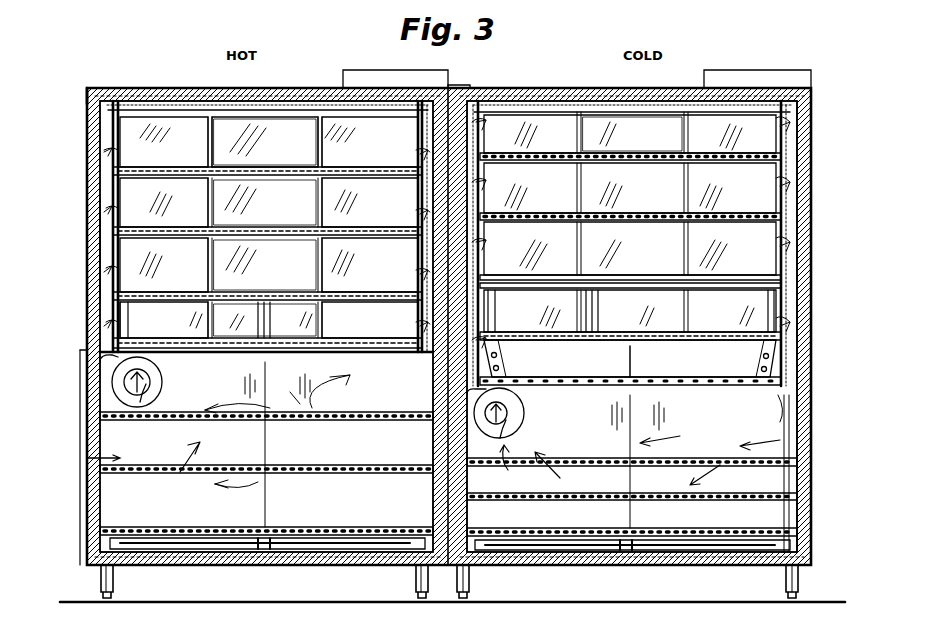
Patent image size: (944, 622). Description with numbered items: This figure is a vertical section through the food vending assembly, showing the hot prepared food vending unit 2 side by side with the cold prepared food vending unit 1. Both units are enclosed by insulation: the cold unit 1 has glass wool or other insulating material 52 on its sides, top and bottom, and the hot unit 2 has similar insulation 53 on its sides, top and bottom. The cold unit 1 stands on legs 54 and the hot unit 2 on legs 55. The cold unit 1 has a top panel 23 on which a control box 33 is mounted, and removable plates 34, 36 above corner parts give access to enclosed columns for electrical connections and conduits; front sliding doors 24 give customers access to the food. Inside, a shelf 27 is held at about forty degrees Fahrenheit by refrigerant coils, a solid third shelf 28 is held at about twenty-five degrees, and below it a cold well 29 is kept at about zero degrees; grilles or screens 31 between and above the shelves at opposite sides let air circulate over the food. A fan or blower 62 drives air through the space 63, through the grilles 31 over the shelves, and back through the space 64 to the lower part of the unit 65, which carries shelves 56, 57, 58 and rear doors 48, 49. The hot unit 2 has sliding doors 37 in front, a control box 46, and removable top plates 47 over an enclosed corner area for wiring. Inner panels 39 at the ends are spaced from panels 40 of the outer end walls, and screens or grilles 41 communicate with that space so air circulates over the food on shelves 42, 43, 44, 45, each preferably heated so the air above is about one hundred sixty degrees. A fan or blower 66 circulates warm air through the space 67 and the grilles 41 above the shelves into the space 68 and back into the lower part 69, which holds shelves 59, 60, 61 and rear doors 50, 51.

The cold prepared food vending unit 1 is at (808, 400).
The hot prepared food vending unit 2 is at (76, 416).
The top panel 23 is at (626, 98).
The front sliding doors 24 is at (582, 138).
The shelf 27 is at (616, 212).
The third shelf 28 is at (612, 264).
The cold well 29 is at (642, 366).
The grilles or screens 31 is at (482, 122).
The control box 33 is at (735, 70).
The removable plate 34 is at (462, 88).
The removable plate 36 is at (636, 153).
The sliding doors 37 is at (214, 146).
The inner panels 39 is at (118, 218).
The panels 40 is at (100, 232).
The screens or grilles 41 is at (122, 148).
The shelf 42 is at (256, 158).
The shelf 43 is at (252, 226).
The shelf 44 is at (246, 290).
The shelf 45 is at (248, 334).
The control box 46 is at (392, 70).
The removable top plates 47 is at (95, 88).
The door 48 is at (740, 435).
The door 49 is at (580, 435).
The door 50 is at (326, 452).
The door 51 is at (214, 452).
The insulating material 52 is at (550, 96).
The insulation 53 is at (284, 96).
The legs 54 is at (470, 583).
The legs 55 is at (114, 583).
The shelf 56 is at (580, 458).
The shelf 57 is at (580, 493).
The shelf 58 is at (580, 528).
The shelf 59 is at (336, 412).
The shelf 60 is at (355, 465).
The shelf 61 is at (296, 527).
The fan or blower 62 is at (524, 410).
The space 63 is at (488, 314).
The space 64 is at (806, 256).
The lower part of the unit 65 is at (800, 438).
The fan or blower 66 is at (162, 384).
The space 67 is at (100, 268).
The space 68 is at (410, 308).
The lower part 69 is at (88, 458).